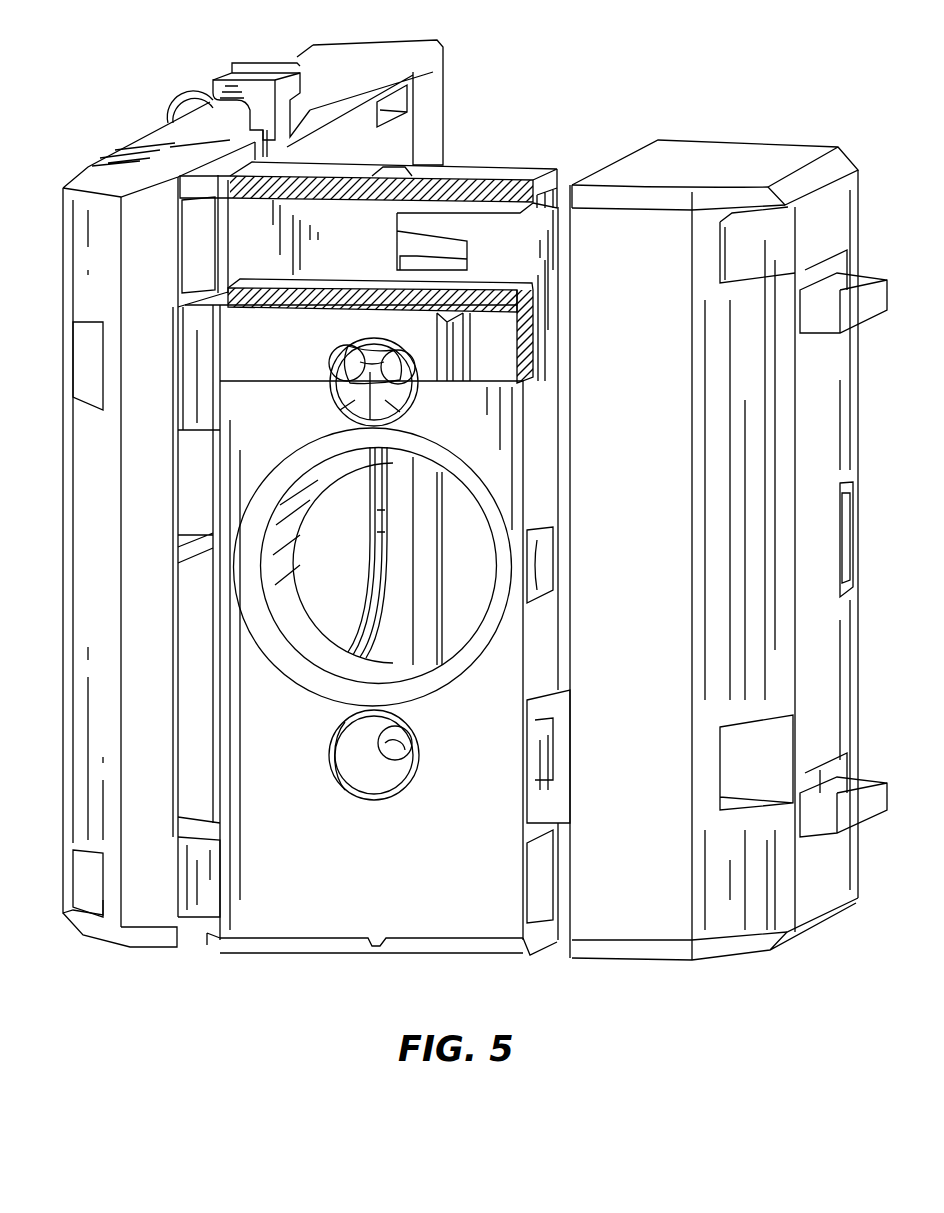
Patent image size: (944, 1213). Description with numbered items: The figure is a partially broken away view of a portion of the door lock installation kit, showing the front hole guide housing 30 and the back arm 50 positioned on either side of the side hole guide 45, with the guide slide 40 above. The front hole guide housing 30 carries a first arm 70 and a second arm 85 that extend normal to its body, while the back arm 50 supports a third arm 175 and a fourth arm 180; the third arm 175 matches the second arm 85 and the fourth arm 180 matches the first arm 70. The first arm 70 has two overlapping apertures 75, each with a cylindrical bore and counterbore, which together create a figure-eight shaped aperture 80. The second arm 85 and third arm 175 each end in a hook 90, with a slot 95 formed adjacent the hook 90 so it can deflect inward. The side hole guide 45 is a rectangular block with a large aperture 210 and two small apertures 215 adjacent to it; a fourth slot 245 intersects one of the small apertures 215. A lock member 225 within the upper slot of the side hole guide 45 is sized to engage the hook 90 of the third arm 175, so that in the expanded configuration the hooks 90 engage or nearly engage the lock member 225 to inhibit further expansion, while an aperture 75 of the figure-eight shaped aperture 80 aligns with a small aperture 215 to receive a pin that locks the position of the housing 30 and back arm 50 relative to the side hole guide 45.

The front hole guide housing 30 is at (86, 198).
The guide slide 40 is at (387, 140).
The side hole guide 45 is at (340, 915).
The back arm 50 is at (748, 168).
The first arm 70 is at (264, 352).
The apertures 75 is at (372, 374).
The figure 8 shaped aperture 80 is at (405, 358).
The second arm 85 is at (203, 888).
The hook 90 is at (399, 212).
The slot 95 is at (403, 246).
The third arm 175 is at (520, 263).
The fourth arm 180 is at (550, 737).
The large aperture 210 is at (310, 637).
The small apertures 215 is at (413, 402).
The lock member 225 is at (517, 215).
The fourth slot 245 is at (530, 758).